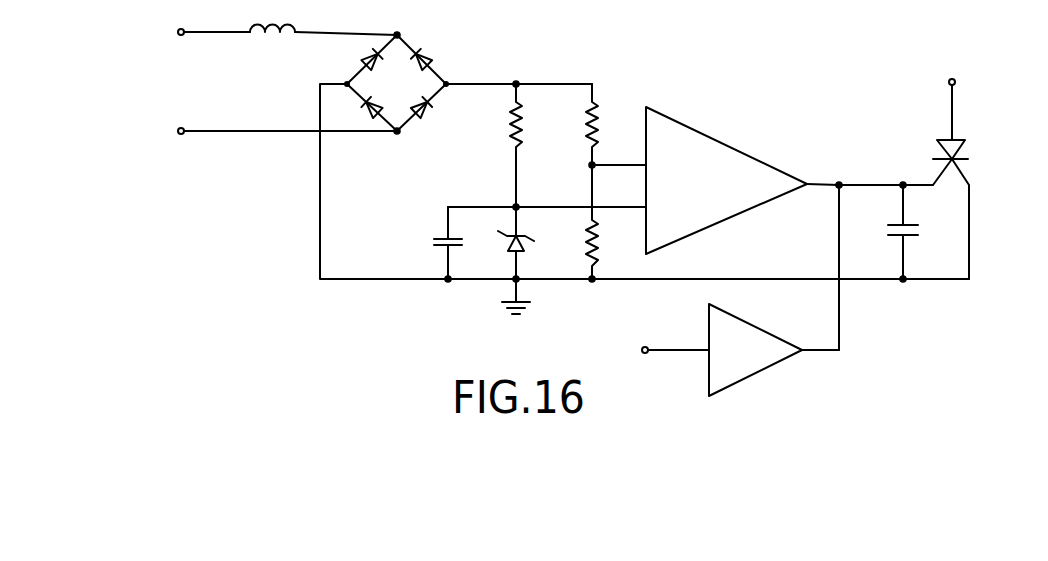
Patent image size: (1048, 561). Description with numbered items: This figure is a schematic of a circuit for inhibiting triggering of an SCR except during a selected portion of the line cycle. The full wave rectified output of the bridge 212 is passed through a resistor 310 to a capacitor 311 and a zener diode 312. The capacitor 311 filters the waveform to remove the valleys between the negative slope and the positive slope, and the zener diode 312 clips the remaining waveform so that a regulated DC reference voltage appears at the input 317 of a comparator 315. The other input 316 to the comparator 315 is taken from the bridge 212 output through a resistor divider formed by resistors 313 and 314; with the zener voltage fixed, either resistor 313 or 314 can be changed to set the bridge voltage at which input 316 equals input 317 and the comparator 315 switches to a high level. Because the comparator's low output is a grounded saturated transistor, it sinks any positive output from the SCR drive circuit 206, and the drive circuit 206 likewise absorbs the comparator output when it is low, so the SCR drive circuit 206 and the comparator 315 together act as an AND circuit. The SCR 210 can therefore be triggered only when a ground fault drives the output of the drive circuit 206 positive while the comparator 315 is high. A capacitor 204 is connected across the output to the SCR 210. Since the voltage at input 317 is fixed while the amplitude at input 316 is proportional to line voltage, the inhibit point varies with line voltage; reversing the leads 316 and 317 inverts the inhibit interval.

The bridge 212 is at (408, 45).
The resistor 310 is at (488, 145).
The resistor 313 is at (569, 124).
The resistor 314 is at (611, 222).
The input 316 is at (619, 152).
The input 317 is at (547, 194).
The capacitor 311 is at (423, 243).
The zener diode 312 is at (530, 260).
The comparator 315 is at (756, 141).
The SCR 210 is at (958, 148).
The capacitor 204 is at (917, 231).
The SCR drive circuit 206 is at (762, 369).